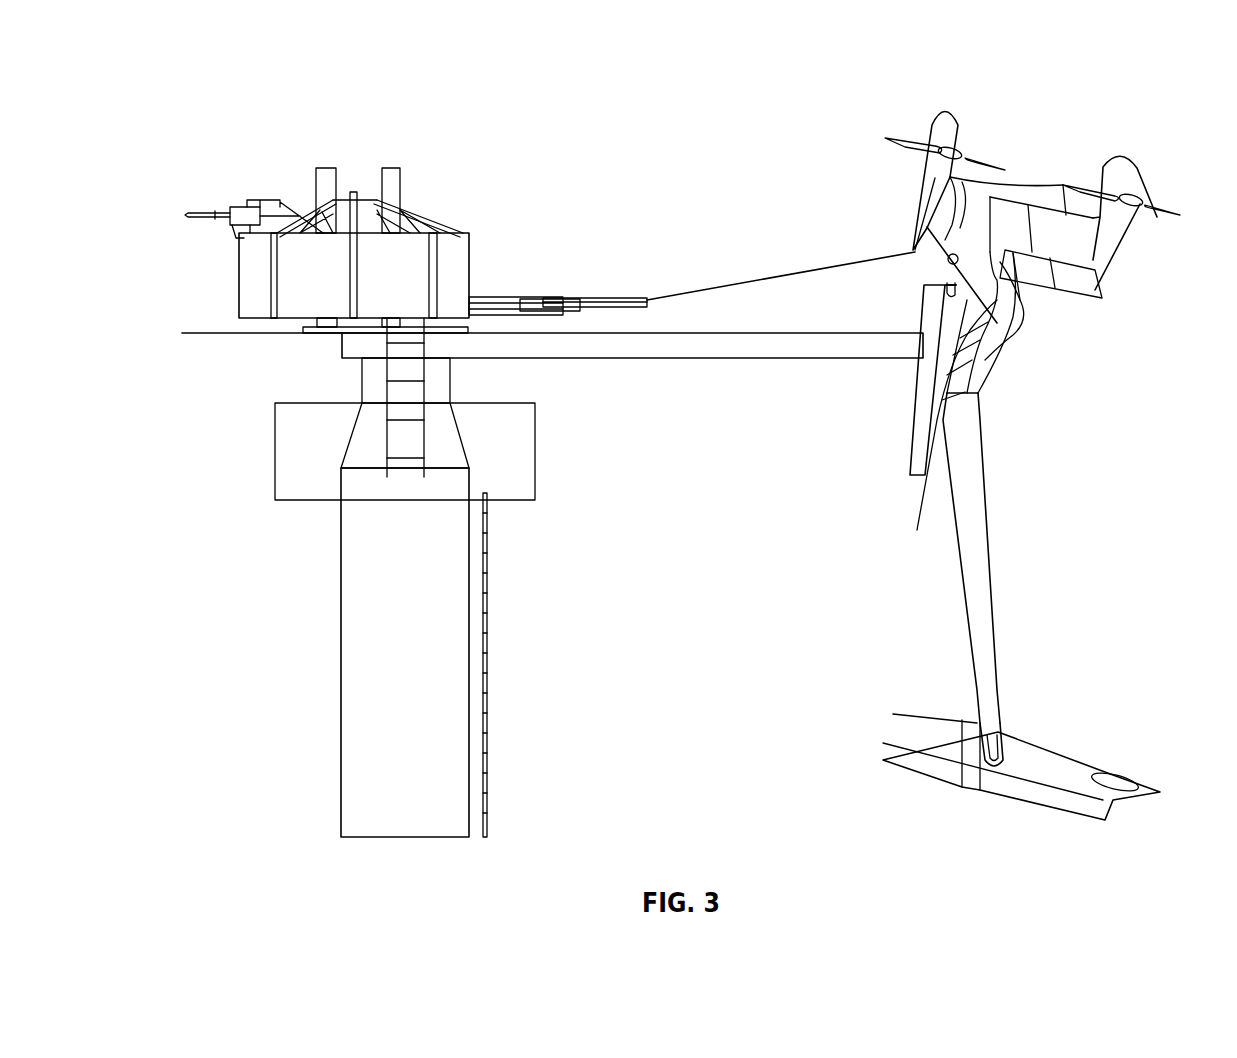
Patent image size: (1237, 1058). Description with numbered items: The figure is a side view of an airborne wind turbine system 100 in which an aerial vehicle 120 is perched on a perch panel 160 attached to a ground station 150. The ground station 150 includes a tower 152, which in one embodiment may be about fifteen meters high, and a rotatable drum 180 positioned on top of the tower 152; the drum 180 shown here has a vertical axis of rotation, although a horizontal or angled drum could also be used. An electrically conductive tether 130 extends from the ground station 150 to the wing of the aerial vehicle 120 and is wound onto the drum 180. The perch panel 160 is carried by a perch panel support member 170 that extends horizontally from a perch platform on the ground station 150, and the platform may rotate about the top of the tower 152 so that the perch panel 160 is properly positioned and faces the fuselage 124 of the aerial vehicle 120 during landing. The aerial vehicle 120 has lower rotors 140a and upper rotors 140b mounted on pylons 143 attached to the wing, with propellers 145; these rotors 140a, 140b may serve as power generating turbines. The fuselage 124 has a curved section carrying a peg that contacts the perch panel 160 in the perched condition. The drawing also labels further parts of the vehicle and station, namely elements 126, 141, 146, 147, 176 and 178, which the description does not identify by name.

The tethered aerial vehicle system 100 is at (695, 104).
The aerial vehicle 120 is at (1143, 104).
The fuselage 124 is at (980, 582).
The float / landing body 126 is at (1025, 767).
The electrically conductive tether 130 is at (762, 274).
The lower rotor 140a is at (945, 135).
The upper rotor 140b is at (1130, 182).
The main body 141 is at (1073, 250).
The pylon 143 is at (952, 225).
The propeller 145 is at (973, 157).
The body joint 146 is at (1013, 315).
The strut 147 is at (944, 427).
The ground station 150 is at (275, 146).
The tower 152 is at (370, 708).
The perch panel 160 is at (588, 298).
The perch panel support member 170 is at (662, 347).
The perch boom 176 is at (917, 435).
The perch hook 178 is at (945, 285).
The rotatable drum 180 is at (255, 283).